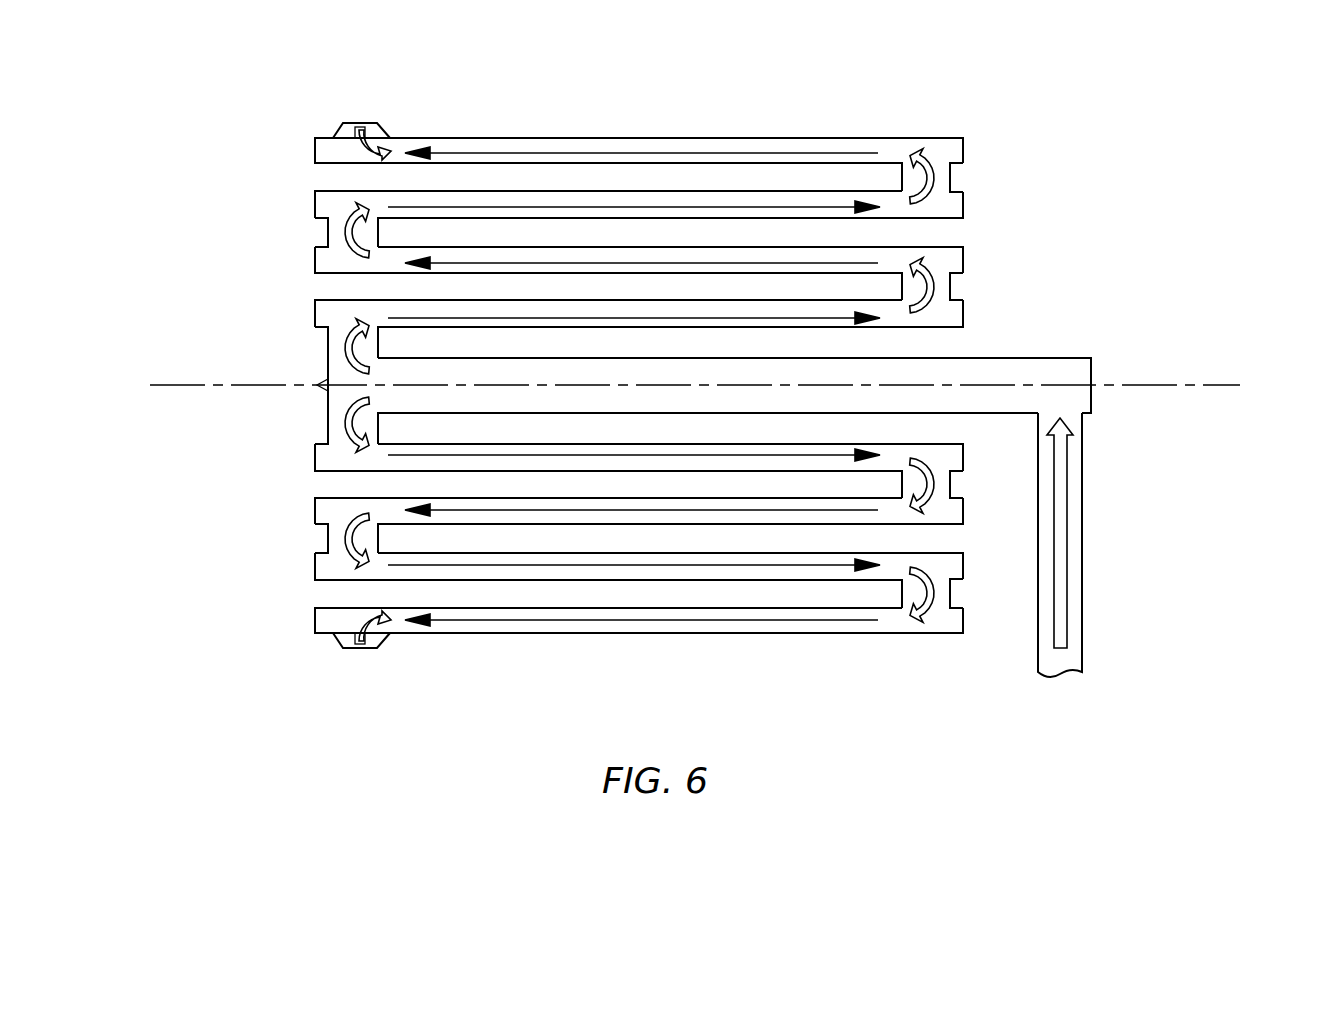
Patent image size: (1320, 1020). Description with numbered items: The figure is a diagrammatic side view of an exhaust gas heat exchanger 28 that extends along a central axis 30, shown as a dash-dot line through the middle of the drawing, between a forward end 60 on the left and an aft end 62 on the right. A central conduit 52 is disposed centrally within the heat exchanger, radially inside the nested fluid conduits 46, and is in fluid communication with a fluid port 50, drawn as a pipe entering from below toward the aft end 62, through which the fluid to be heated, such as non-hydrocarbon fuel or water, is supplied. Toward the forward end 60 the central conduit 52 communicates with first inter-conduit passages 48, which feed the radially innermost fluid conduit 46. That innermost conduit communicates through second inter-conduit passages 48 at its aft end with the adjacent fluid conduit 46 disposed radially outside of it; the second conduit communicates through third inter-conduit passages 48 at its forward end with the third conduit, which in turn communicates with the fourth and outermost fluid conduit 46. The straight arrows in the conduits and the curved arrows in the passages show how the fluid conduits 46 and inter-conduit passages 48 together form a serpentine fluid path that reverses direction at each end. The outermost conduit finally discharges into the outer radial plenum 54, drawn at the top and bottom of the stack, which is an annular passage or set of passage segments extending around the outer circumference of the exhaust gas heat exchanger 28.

The exhaust gas heat exchanger 28 is at (234, 124).
The central axis 30 is at (1205, 385).
The nested fluid conduits 46 is at (886, 153).
The inter-conduit passages 48 is at (942, 181).
The fluid port 50 is at (1084, 607).
The central conduit 52 is at (1005, 358).
The outer radial plenum 54 is at (375, 130).
The forward end 60 is at (255, 258).
The aft end 62 is at (1048, 266).